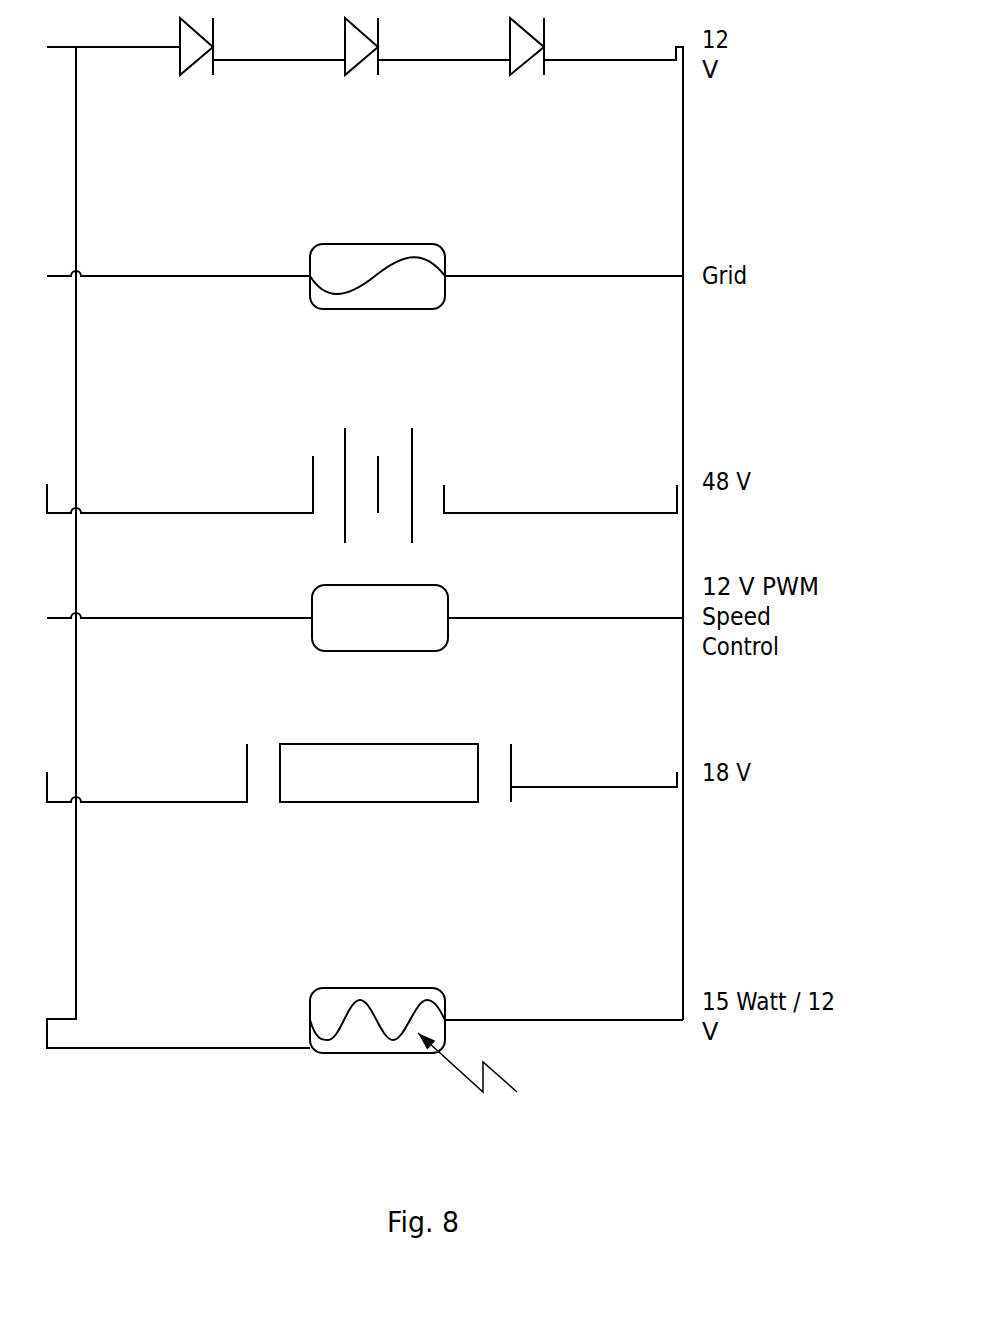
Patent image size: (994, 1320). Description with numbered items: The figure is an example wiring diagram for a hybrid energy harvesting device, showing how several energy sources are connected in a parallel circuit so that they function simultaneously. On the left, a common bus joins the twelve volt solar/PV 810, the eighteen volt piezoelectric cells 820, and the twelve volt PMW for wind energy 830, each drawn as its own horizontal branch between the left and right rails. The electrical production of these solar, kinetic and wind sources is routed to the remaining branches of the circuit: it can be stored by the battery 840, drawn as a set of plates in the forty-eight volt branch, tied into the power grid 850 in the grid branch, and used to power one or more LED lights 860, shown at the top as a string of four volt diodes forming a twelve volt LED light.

The solar/PV 810 is at (430, 982).
The piezoelectric cells 820 is at (366, 802).
The PMW for wind energy 830 is at (366, 651).
The battery 840 is at (399, 434).
The power grid 850 is at (400, 309).
The LED lights 860 is at (567, 127).